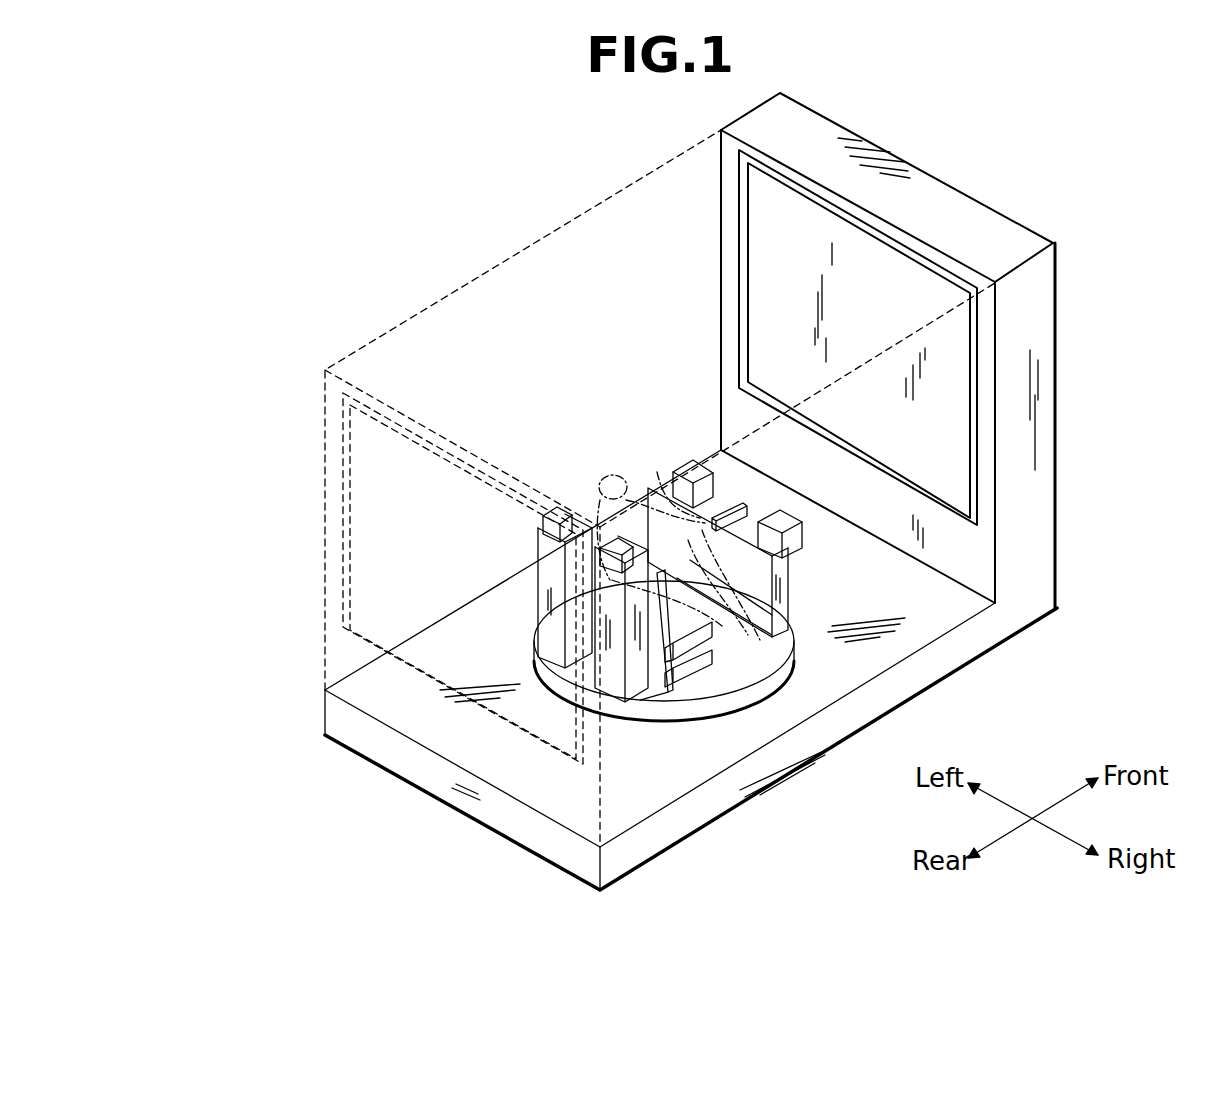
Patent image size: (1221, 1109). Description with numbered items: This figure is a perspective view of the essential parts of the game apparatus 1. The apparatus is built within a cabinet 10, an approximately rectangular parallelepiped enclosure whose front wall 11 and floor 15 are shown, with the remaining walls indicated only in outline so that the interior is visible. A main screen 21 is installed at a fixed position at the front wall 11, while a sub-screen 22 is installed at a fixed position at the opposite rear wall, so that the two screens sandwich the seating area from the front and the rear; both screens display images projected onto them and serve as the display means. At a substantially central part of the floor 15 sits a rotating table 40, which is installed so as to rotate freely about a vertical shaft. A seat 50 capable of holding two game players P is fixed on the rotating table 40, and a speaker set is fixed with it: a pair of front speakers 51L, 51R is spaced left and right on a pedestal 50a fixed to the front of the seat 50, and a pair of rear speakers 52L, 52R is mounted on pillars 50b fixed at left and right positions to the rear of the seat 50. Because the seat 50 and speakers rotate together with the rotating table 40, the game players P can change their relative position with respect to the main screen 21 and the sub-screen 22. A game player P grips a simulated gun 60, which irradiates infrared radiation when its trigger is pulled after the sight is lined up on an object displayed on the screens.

The game apparatus 1 is at (278, 262).
The cabinet 10 is at (480, 272).
The front wall 11 is at (998, 228).
The floor 15 is at (495, 815).
The main screen 21 is at (862, 255).
The sub-screen 22 is at (392, 564).
The rotating table 40 is at (677, 718).
The seat 50 is at (753, 650).
The pedestal 50a is at (785, 583).
The pillars 50b is at (550, 557).
The front speaker 51L is at (693, 468).
The front speaker 51R is at (800, 535).
The rear speaker 52L is at (560, 505).
The rear speaker 52R is at (608, 558).
The simulated gun 60 is at (727, 514).
The game player P is at (610, 471).